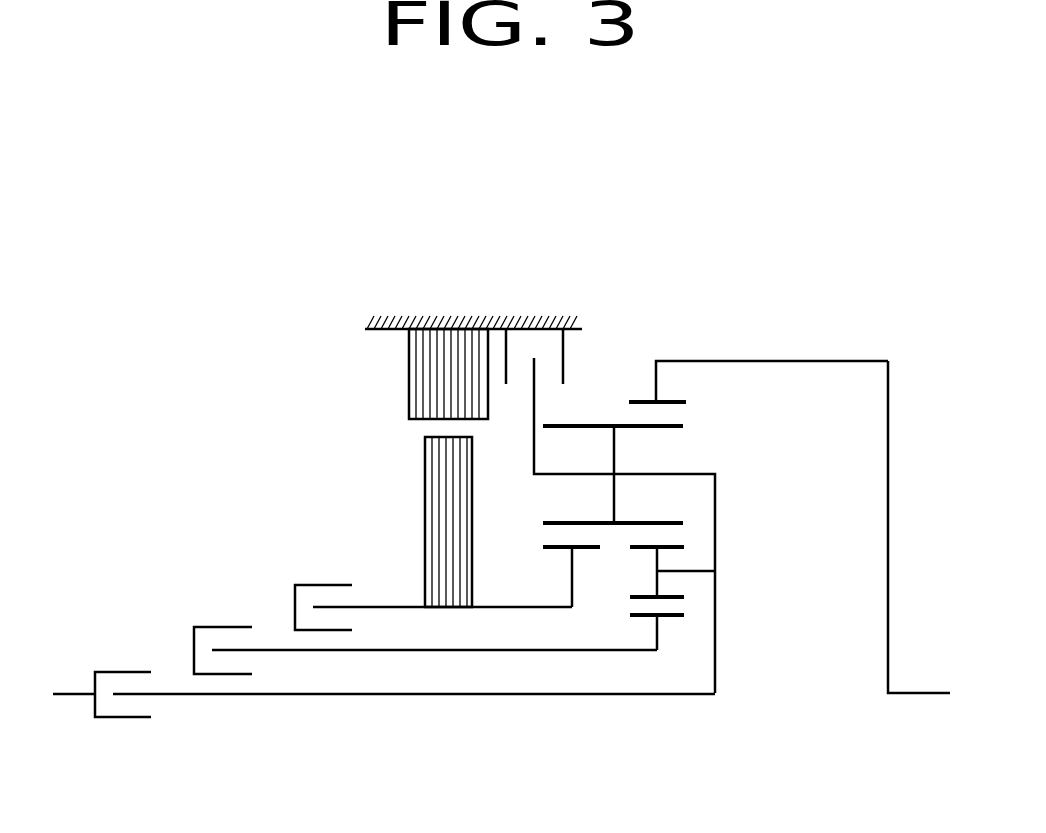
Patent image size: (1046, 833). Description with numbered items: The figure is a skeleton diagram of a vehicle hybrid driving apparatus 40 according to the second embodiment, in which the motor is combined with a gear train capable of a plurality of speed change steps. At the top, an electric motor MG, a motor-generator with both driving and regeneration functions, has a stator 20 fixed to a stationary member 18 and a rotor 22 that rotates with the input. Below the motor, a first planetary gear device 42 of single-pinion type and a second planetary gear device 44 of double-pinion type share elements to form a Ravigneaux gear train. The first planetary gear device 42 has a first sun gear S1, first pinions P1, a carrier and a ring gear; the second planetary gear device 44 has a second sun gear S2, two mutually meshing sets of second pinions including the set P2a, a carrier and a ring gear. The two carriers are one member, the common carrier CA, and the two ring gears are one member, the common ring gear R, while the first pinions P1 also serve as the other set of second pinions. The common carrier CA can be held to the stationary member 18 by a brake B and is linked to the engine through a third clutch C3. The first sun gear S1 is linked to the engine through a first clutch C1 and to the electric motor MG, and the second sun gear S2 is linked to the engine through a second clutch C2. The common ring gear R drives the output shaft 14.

The output shaft 14 is at (918, 695).
The stationary member 18 is at (492, 329).
The stator 20 is at (452, 373).
The rotor 22 is at (445, 525).
The vehicle hybrid driving apparatus 40 is at (715, 349).
The first planetary gear device 42 is at (453, 671).
The second planetary gear device 44 is at (641, 668).
The electric motor MG is at (379, 460).
The brake B is at (547, 356).
The first clutch C1 is at (433, 584).
The second clutch C2 is at (292, 607).
The third clutch C3 is at (192, 650).
The common ring gear R is at (630, 402).
The common carrier CA is at (620, 470).
The first pinions P1 is at (640, 521).
The second pinions P2a is at (640, 595).
The first sun gear S1 is at (556, 548).
The second sun gear S2 is at (670, 616).